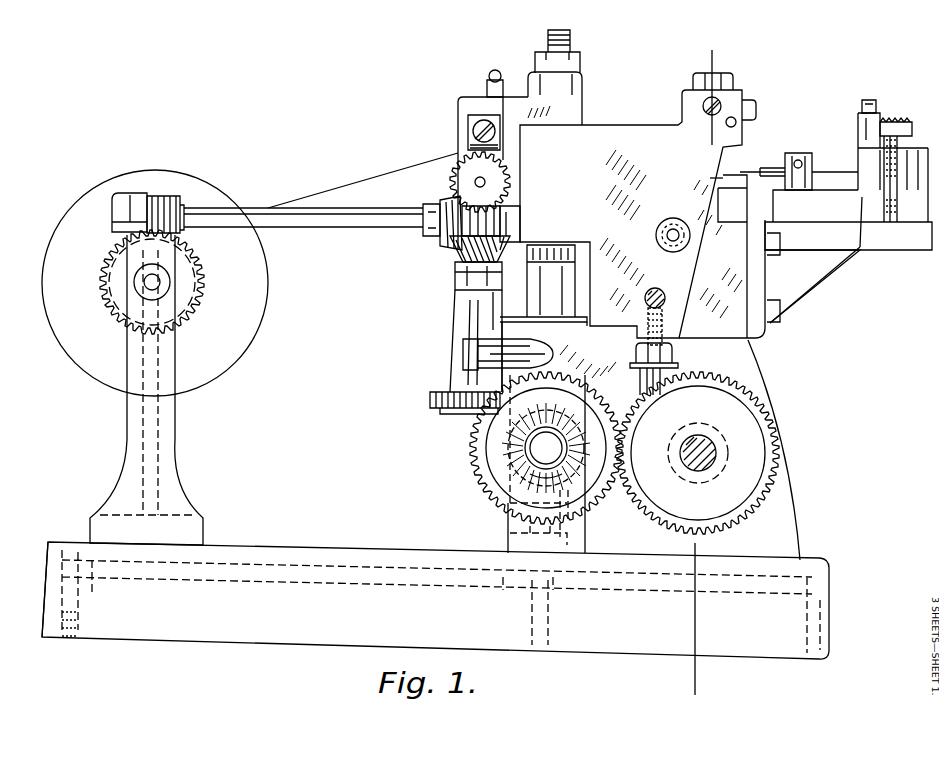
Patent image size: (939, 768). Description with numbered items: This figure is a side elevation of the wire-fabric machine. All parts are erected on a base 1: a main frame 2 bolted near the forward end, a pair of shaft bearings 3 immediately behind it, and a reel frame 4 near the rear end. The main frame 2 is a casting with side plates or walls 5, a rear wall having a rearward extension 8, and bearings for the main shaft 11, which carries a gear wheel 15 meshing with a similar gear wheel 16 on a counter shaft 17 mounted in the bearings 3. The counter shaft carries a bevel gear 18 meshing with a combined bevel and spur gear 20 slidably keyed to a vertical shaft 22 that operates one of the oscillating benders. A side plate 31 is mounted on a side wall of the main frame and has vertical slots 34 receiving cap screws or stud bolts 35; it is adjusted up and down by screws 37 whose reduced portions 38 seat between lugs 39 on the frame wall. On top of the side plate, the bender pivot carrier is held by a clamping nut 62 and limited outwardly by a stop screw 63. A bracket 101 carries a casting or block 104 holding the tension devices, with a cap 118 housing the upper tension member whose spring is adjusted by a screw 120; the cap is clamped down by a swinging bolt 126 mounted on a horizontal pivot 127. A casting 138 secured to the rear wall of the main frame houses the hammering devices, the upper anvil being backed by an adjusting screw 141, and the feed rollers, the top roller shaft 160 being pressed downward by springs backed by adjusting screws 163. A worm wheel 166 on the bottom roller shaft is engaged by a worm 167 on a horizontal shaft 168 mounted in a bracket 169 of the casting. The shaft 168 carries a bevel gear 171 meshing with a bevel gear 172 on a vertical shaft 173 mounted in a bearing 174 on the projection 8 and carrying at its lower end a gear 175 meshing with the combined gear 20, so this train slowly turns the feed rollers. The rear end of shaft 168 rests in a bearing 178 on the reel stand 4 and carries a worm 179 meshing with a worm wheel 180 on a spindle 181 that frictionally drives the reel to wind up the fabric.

The base 1 is at (435, 600).
The main frame 2 is at (775, 516).
The shaft bearings 3 is at (512, 520).
The reel frame 4 is at (168, 478).
The side plates or walls 5 is at (669, 373).
The rearward extension 8 is at (525, 355).
The main shaft 11 is at (716, 448).
The gear wheel 15 is at (781, 464).
The gear wheel 16 is at (470, 454).
The counter shaft 17 is at (546, 448).
The bevel gear 18 is at (544, 490).
The combined bevel and spur gear 20 is at (575, 425).
The vertical shaft 22 is at (546, 298).
The side plate 31 is at (642, 234).
The vertical slots 34 is at (675, 231).
The cap screws or stud bolts 35 is at (691, 238).
The screws 37 is at (646, 343).
The reduced portions 38 is at (672, 374).
The lugs 39 is at (640, 382).
The clamping nut 62 is at (724, 75).
The screw 63 is at (723, 103).
The bracket 101 is at (803, 279).
The casting or block 104 is at (836, 199).
The cap 118 is at (856, 132).
The screw 120 is at (866, 110).
The swinging bolt 126 is at (896, 118).
The horizontal pivot 127 is at (862, 248).
The casting 138 is at (513, 117).
The adjusting screw 141 is at (572, 46).
The shaft 160 is at (470, 131).
The adjusting screws 163 is at (500, 72).
The worm wheel 166 is at (507, 170).
The worm 167 is at (497, 216).
The horizontal shaft 168 is at (326, 230).
The bracket 169 is at (504, 226).
The bevel gear 171 is at (428, 236).
The bevel gear 172 is at (452, 258).
The vertical shaft 173 is at (472, 284).
The bearing 174 is at (452, 326).
The gear 175 is at (428, 400).
The bearing 178 is at (132, 194).
The worm 179 is at (172, 200).
The worm wheel 180 is at (204, 300).
The spindle 181 is at (150, 284).